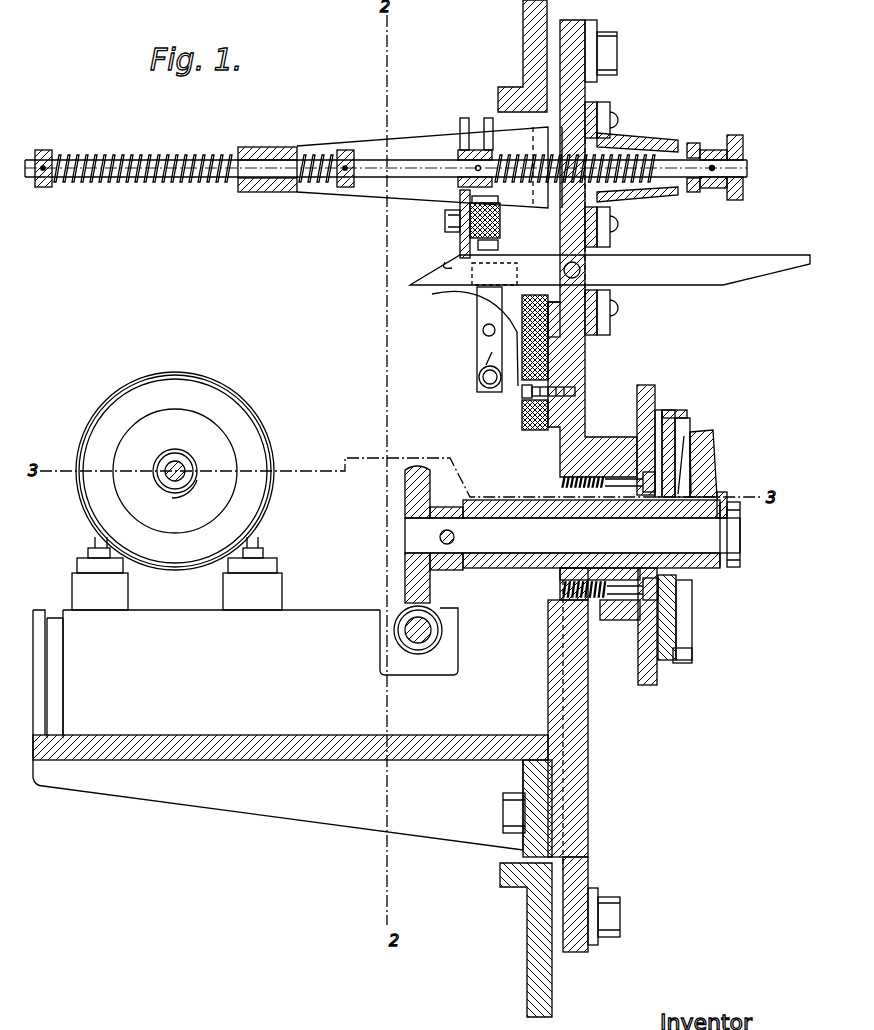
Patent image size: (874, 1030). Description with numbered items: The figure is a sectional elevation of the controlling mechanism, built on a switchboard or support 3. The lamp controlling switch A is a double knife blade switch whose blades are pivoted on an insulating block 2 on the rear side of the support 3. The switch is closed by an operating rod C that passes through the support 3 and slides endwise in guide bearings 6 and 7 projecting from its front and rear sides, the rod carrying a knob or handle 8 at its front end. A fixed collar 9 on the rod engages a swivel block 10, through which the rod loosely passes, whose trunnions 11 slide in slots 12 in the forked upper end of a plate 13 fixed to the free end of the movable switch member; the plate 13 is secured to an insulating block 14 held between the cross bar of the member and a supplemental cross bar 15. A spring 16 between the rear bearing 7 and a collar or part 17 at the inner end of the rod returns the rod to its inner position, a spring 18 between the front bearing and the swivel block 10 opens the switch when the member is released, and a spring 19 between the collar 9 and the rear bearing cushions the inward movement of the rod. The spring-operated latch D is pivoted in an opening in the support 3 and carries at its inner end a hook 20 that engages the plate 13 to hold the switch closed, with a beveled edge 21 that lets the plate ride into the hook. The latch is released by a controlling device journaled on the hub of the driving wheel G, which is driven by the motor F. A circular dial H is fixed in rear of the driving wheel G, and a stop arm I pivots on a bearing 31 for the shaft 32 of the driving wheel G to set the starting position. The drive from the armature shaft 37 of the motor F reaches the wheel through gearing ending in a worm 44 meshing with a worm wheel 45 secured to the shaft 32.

The insulating block 2 is at (522, 418).
The switchboard or support 3 is at (580, 724).
The guide bearing 6 is at (616, 140).
The guide bearing 7 is at (279, 147).
The knob or handle 8 is at (743, 186).
The fixed collar 9 is at (346, 150).
The swivel block 10 is at (458, 152).
The trunnions 11 is at (458, 182).
The slots 12 is at (470, 118).
The plate 13 is at (460, 251).
The insulating block 14 is at (445, 219).
The supplemental cross bar 15 is at (477, 308).
The spring 16 is at (134, 154).
The collar or part 17 is at (45, 150).
The spring 18 is at (517, 156).
The spring 19 is at (318, 193).
The hook 20 is at (475, 330).
The beveled edge 21 is at (440, 266).
The bearing 31 is at (556, 502).
The shaft 32 is at (572, 536).
The armature shaft 37 is at (175, 460).
The worm 44 is at (442, 631).
The worm wheel 45 is at (408, 482).
The lamp controlling switch A is at (477, 340).
The operating rod C is at (429, 167).
The spring-operated latch D is at (610, 269).
The motor F is at (177, 491).
The driving wheel G is at (676, 618).
The circular dial H is at (637, 393).
The stop arm I is at (643, 440).